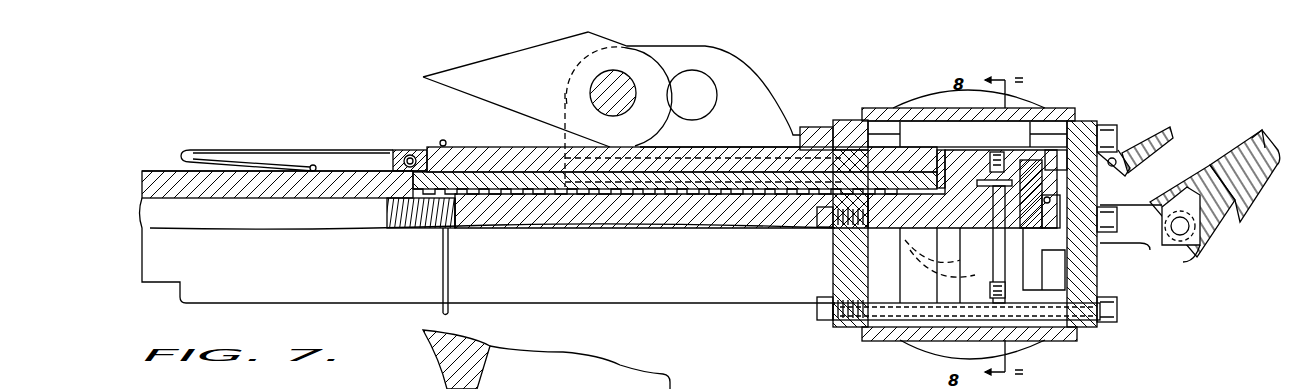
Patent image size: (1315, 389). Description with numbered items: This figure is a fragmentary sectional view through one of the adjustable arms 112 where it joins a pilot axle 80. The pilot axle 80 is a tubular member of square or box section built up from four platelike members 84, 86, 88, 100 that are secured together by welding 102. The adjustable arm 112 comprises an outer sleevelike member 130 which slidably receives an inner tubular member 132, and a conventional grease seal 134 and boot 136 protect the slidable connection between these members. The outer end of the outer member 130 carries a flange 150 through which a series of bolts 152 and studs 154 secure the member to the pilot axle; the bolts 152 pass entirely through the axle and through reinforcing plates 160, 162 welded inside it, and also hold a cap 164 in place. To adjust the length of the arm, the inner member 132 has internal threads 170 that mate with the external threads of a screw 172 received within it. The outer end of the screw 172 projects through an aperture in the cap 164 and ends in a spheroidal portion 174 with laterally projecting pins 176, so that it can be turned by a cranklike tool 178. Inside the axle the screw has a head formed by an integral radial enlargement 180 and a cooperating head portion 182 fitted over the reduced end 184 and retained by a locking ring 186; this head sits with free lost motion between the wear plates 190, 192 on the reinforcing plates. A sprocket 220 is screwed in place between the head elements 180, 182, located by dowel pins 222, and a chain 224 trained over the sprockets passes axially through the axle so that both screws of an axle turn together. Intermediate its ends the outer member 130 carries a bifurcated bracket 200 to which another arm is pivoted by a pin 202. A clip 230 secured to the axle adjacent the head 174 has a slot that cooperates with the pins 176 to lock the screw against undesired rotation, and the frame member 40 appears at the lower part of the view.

The frame member 40 is at (473, 380).
The pilot axle 80 is at (1070, 118).
The platelike member 84 is at (863, 117).
The platelike member 86 is at (1070, 343).
The platelike member 88 is at (857, 118).
The platelike member 100 is at (1100, 290).
The welding 102 is at (1085, 124).
The adjustable arm 112 is at (478, 150).
The outer sleevelike member 130 is at (707, 147).
The inner tubular member 132 is at (202, 174).
The grease seal 134 is at (407, 153).
The boot 136 is at (310, 148).
The flange 150 is at (833, 118).
The bolt 152 is at (820, 312).
The stud 154 is at (820, 226).
The reinforcing plate 160 is at (872, 258).
The reinforcing plate 162 is at (1070, 203).
The cap 164 is at (1130, 172).
The internal threads 170 is at (435, 187).
The screw 172 is at (460, 230).
The spheroidal portion 174 is at (1183, 262).
The pin 176 is at (1200, 250).
The cranklike tool 178 is at (1254, 138).
The radial enlargement 180 is at (930, 165).
The head portion 182 is at (1035, 150).
The reduced end 184 is at (1058, 192).
The locking ring 186 is at (1035, 200).
The wear plate 190 is at (925, 148).
The wear plate 192 is at (1066, 166).
The bifurcated bracket 200 is at (710, 60).
The pin 202 is at (600, 88).
The sprocket 220 is at (968, 280).
The dowel pin 222 is at (985, 195).
The chain 224 is at (1003, 296).
The clip 230 is at (1186, 108).